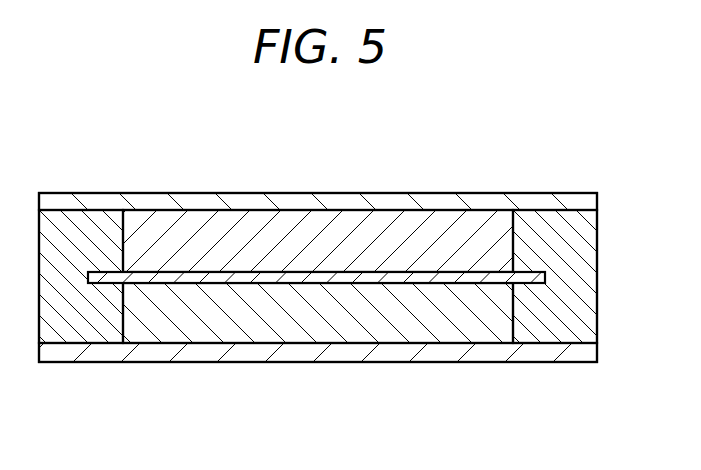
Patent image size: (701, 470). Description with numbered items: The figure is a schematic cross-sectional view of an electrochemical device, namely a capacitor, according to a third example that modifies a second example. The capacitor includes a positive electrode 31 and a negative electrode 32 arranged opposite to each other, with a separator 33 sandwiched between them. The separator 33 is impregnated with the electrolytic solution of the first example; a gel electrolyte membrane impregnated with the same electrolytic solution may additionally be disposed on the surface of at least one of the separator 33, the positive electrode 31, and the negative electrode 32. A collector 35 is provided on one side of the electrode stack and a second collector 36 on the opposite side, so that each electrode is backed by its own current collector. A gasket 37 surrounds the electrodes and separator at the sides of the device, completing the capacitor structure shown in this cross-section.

The positive electrode 31 is at (217, 233).
The negative electrode 32 is at (217, 320).
The separator 33 is at (434, 280).
The collector 35 is at (325, 205).
The collector 36 is at (325, 355).
The gasket 37 is at (572, 257).